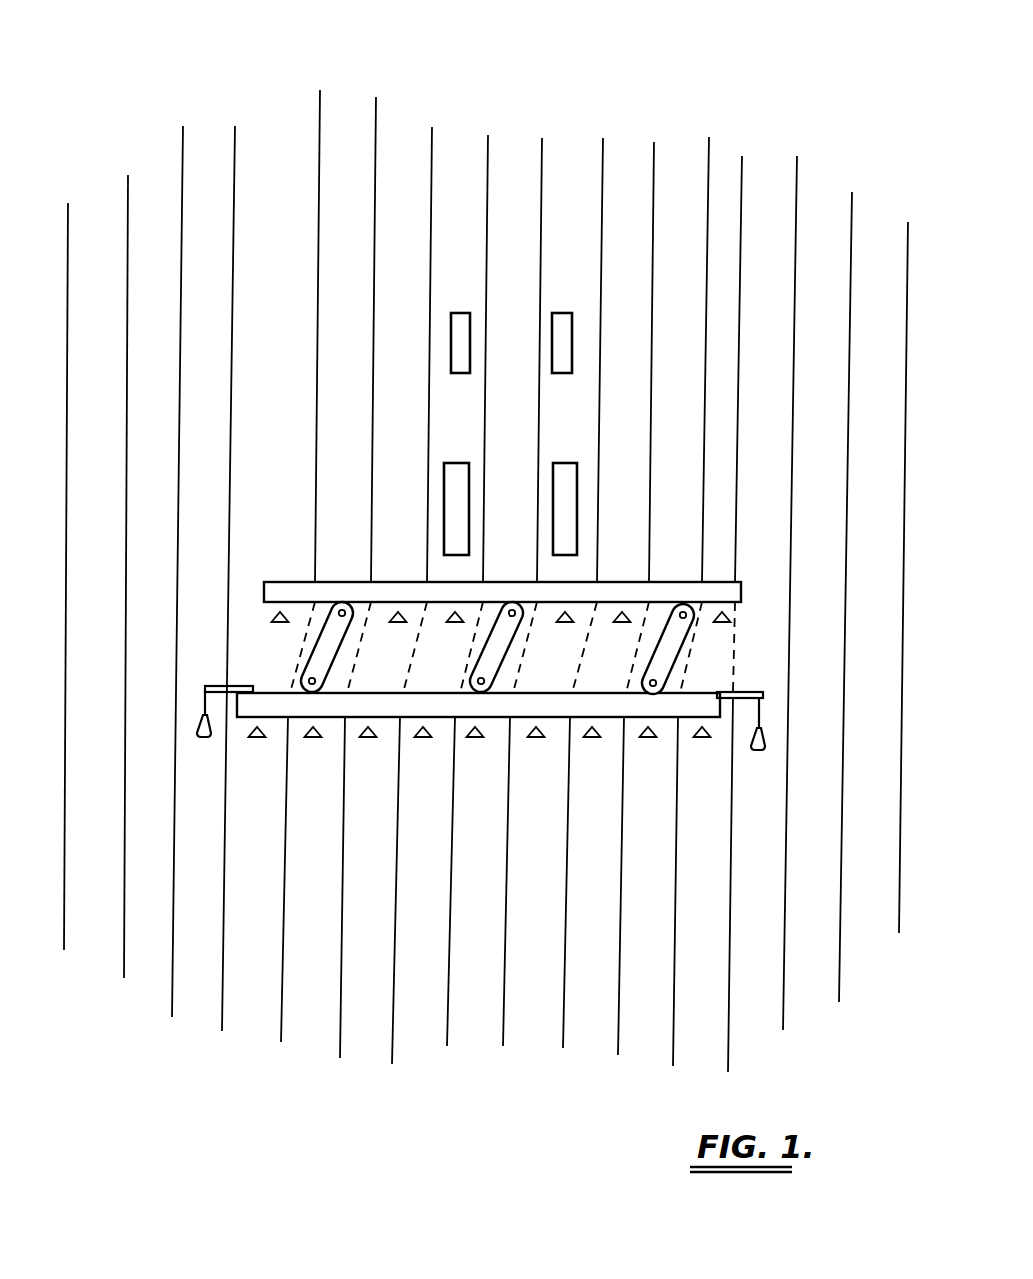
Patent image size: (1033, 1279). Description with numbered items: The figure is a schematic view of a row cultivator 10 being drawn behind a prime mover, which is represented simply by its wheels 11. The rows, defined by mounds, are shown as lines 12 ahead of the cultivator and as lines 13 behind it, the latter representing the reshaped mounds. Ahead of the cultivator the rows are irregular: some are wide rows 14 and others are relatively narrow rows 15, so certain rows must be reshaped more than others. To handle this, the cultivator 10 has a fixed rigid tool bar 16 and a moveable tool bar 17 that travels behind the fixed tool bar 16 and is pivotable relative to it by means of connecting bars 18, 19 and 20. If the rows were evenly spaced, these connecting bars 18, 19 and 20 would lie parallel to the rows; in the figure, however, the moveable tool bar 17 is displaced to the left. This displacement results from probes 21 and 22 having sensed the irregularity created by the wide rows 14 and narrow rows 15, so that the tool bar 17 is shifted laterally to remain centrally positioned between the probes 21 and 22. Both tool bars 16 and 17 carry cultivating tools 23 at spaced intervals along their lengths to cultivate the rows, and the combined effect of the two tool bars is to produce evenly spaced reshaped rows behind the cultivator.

The row cultivator 10 is at (815, 634).
The wheels 11 is at (613, 380).
The lines 12 is at (210, 122).
The lines 13 is at (315, 1028).
The wide rows 14 is at (332, 80).
The narrow rows 15 is at (762, 128).
The fixed rigid tool bar 16 is at (717, 597).
The moveable tool bar 17 is at (602, 710).
The connecting bar 18 is at (667, 665).
The connecting bar 19 is at (493, 674).
The connecting bar 20 is at (330, 650).
The probe 21 is at (203, 716).
The probe 22 is at (766, 738).
The cultivating tools 23 is at (272, 612).